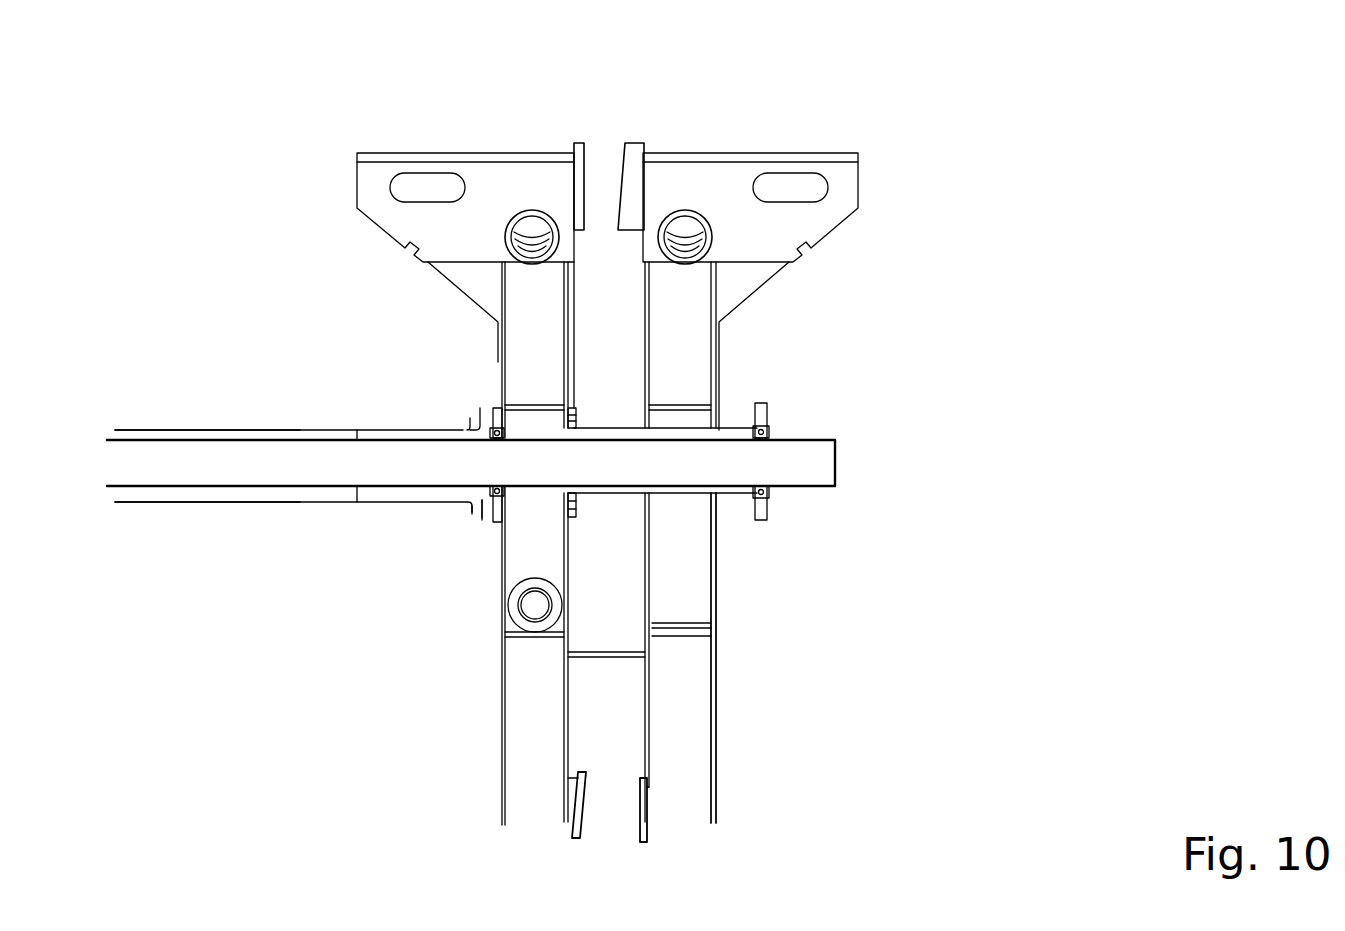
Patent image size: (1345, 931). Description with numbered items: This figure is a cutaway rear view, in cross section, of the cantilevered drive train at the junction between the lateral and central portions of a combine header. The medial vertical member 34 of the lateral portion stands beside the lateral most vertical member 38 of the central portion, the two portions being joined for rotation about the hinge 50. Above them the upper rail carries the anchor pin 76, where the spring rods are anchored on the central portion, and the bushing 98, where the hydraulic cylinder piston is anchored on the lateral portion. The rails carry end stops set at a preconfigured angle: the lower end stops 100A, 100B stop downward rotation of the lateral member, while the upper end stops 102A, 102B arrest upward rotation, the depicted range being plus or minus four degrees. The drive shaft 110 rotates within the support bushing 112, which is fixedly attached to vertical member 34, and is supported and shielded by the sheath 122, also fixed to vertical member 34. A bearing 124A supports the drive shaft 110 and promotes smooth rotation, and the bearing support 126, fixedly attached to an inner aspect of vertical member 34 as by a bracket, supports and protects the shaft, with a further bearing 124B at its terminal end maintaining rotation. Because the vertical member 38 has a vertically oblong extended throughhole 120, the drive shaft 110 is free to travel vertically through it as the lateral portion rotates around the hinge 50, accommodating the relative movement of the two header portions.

The medial vertical member 34 is at (553, 557).
The lateral most vertical member 38 is at (700, 557).
The hinge 50 is at (512, 624).
The anchor pin 76 is at (686, 228).
The bushing 98 is at (533, 228).
The lower end stop 100A is at (583, 836).
The lower end stop 100B is at (647, 835).
The upper end stop 102A is at (578, 143).
The upper end stop 102B is at (637, 142).
The drive shaft 110 is at (247, 468).
The support bushing 112 is at (498, 522).
The extended throughhole 120 is at (715, 510).
The sheath 122 is at (188, 430).
The bearing 124A is at (480, 507).
The bearing 124B is at (772, 493).
The bearing support 126 is at (732, 435).